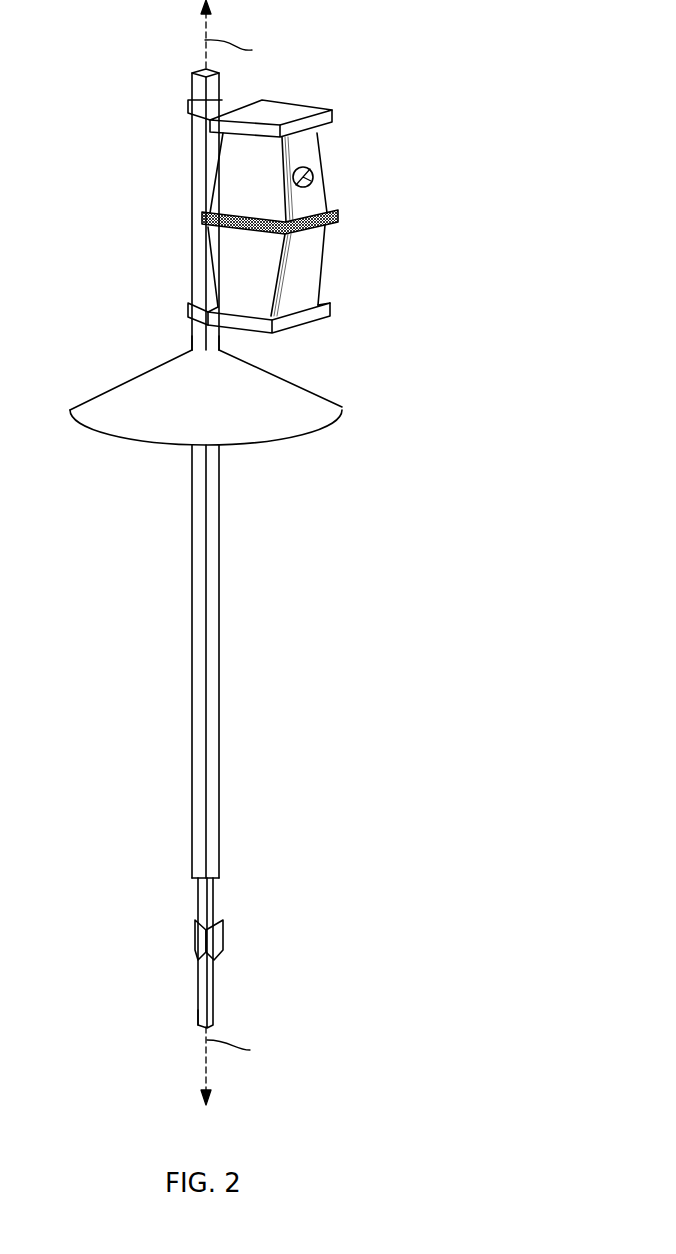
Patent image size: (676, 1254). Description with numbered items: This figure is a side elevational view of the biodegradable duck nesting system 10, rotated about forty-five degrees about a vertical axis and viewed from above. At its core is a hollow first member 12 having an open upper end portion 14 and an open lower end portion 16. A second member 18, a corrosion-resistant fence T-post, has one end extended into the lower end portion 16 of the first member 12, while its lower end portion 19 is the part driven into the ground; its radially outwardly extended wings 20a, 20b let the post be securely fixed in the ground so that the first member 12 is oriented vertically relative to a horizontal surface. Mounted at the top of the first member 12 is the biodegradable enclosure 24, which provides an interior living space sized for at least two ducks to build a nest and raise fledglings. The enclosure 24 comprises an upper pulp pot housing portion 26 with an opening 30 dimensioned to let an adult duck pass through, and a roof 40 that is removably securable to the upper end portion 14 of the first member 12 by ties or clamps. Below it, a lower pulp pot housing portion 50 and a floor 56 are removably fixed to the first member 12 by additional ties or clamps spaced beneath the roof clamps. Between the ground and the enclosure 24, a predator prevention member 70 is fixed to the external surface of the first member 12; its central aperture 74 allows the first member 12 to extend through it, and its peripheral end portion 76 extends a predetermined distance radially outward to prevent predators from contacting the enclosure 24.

The biodegradable duck nesting system 10 is at (450, 27).
The first member 12 is at (220, 665).
The upper end portion 14 is at (194, 63).
The lower end portion 16 is at (182, 861).
The second member 18 is at (213, 982).
The tip end 19 is at (189, 1009).
The wing 20a is at (195, 935).
The wing 20b is at (223, 935).
The biodegradable enclosure 24 is at (377, 100).
The upper pulp pot housing portion 26 is at (266, 194).
The opening 30 is at (313, 180).
The roof 40 is at (290, 113).
The lower pulp pot housing portion 50 is at (266, 284).
The floor 56 is at (283, 322).
The predator prevention member 70 is at (226, 408).
The central aperture 74 is at (180, 331).
The peripheral end portion 76 is at (353, 395).